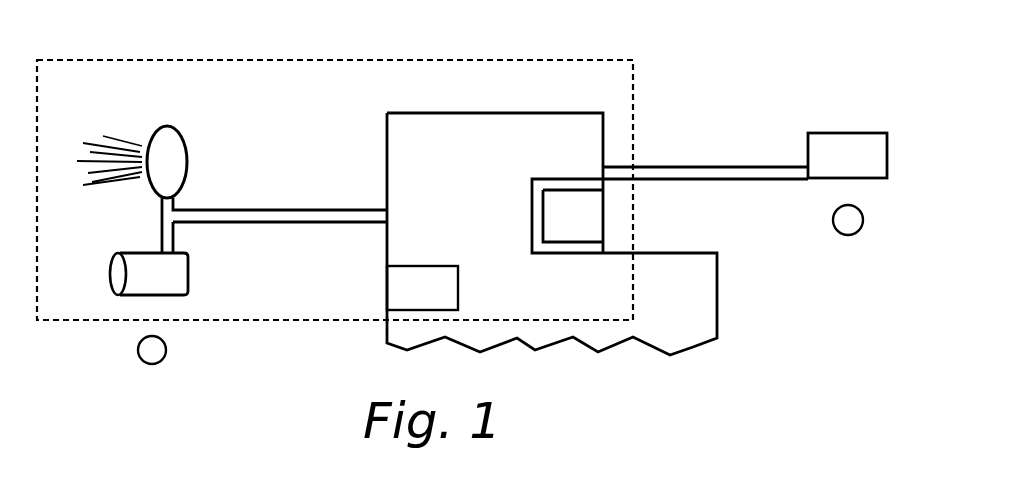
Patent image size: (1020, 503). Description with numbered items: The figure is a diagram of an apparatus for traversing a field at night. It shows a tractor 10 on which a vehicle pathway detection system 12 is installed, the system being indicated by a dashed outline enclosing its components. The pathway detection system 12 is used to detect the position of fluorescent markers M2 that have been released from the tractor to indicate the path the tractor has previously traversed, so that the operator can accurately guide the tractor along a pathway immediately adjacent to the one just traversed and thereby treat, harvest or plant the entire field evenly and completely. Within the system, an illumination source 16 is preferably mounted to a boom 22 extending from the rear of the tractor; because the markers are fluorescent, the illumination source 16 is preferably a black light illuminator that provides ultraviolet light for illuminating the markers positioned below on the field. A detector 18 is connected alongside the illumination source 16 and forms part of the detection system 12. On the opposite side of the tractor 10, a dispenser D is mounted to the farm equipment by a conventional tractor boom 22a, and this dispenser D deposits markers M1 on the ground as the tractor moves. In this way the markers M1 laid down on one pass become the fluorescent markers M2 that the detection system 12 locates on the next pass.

The tractor 10 is at (680, 253).
The vehicle pathway detection system 12 is at (635, 82).
The illumination source 16 is at (173, 160).
The detector 18 is at (168, 277).
The boom 22 is at (290, 213).
The tractor boom 22a is at (700, 167).
The dispenser D is at (837, 142).
The markers M1 is at (842, 225).
The fluorescent markers M2 is at (156, 352).